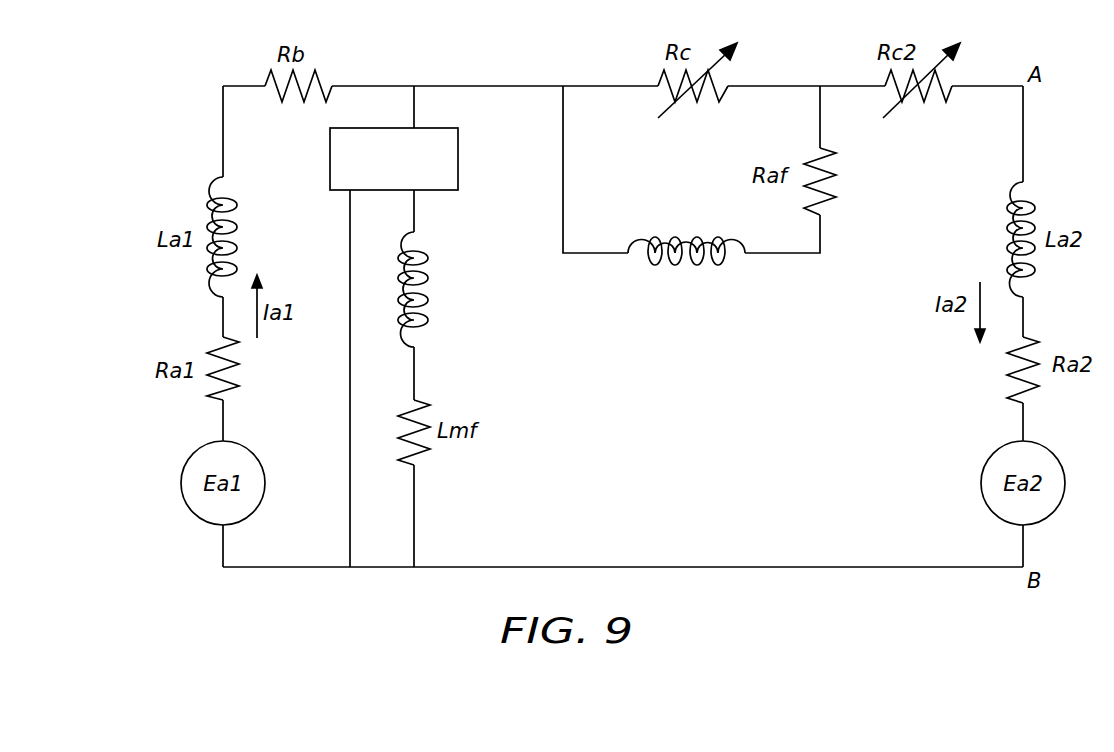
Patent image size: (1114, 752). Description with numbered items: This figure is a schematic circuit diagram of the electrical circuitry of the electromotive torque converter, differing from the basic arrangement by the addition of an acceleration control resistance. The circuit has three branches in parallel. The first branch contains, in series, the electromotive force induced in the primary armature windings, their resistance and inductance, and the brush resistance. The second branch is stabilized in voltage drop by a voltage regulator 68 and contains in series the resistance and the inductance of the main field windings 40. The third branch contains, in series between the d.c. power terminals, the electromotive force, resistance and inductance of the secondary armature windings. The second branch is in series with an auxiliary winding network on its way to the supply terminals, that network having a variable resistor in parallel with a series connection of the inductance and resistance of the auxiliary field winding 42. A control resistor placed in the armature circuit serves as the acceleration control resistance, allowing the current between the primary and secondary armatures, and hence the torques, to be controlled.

The voltage regulator 68 is at (464, 148).
The main field windings 40 is at (442, 332).
The auxiliary field winding 42 is at (719, 284).